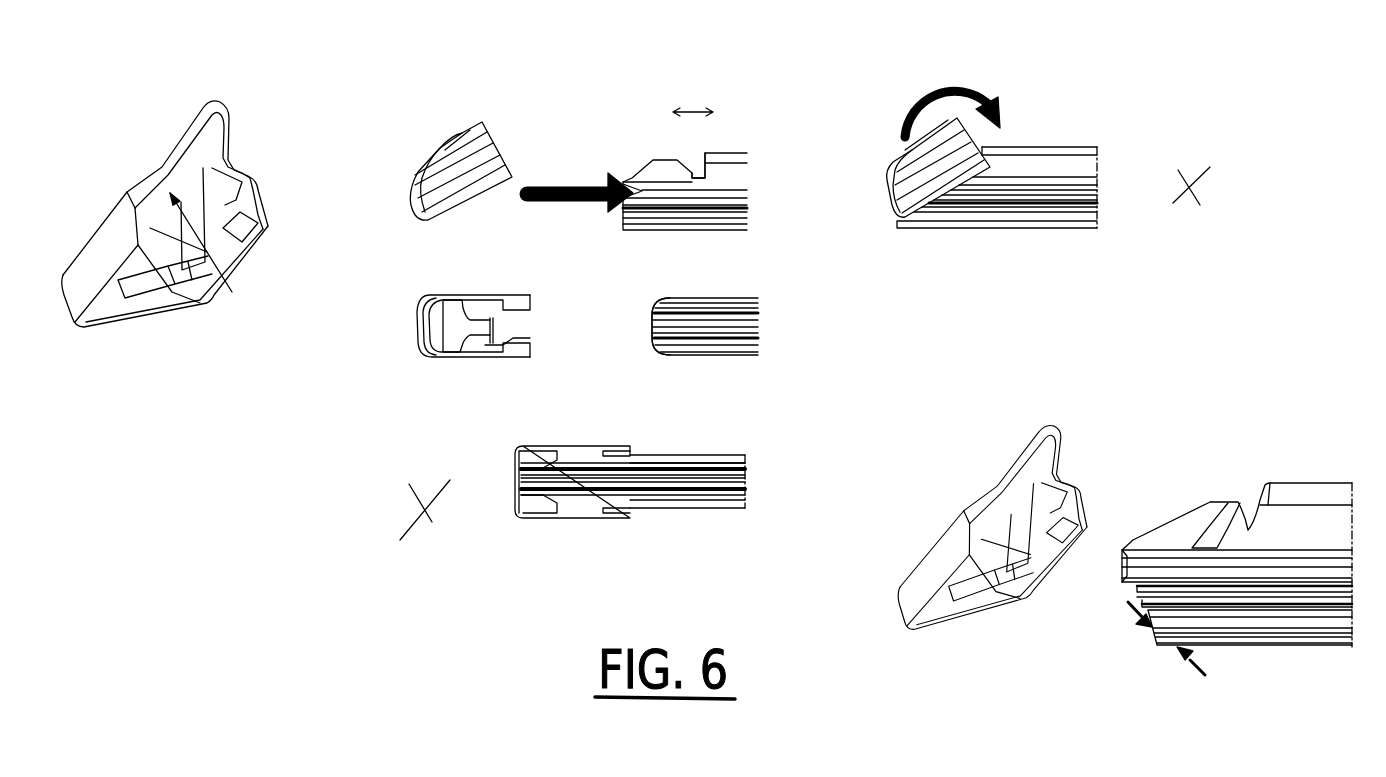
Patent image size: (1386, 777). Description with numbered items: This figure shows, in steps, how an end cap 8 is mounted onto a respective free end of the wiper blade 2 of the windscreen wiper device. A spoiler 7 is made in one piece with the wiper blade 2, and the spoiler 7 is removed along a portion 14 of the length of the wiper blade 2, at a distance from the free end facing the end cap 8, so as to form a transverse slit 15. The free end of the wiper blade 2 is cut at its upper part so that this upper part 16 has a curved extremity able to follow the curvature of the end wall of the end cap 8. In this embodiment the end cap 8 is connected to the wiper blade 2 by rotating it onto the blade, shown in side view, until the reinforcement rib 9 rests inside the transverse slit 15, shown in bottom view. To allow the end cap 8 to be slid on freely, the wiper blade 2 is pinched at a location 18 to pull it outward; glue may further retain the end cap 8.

The wiper blade 2 is at (688, 225).
The spoiler 7 is at (728, 157).
The end cap 8 is at (218, 100).
The reinforcement rib 9 is at (213, 352).
The portion 14 is at (704, 112).
The transverse slit 15 is at (703, 172).
The upper part of the wiper blade 16 is at (645, 335).
The location 18 is at (1153, 667).